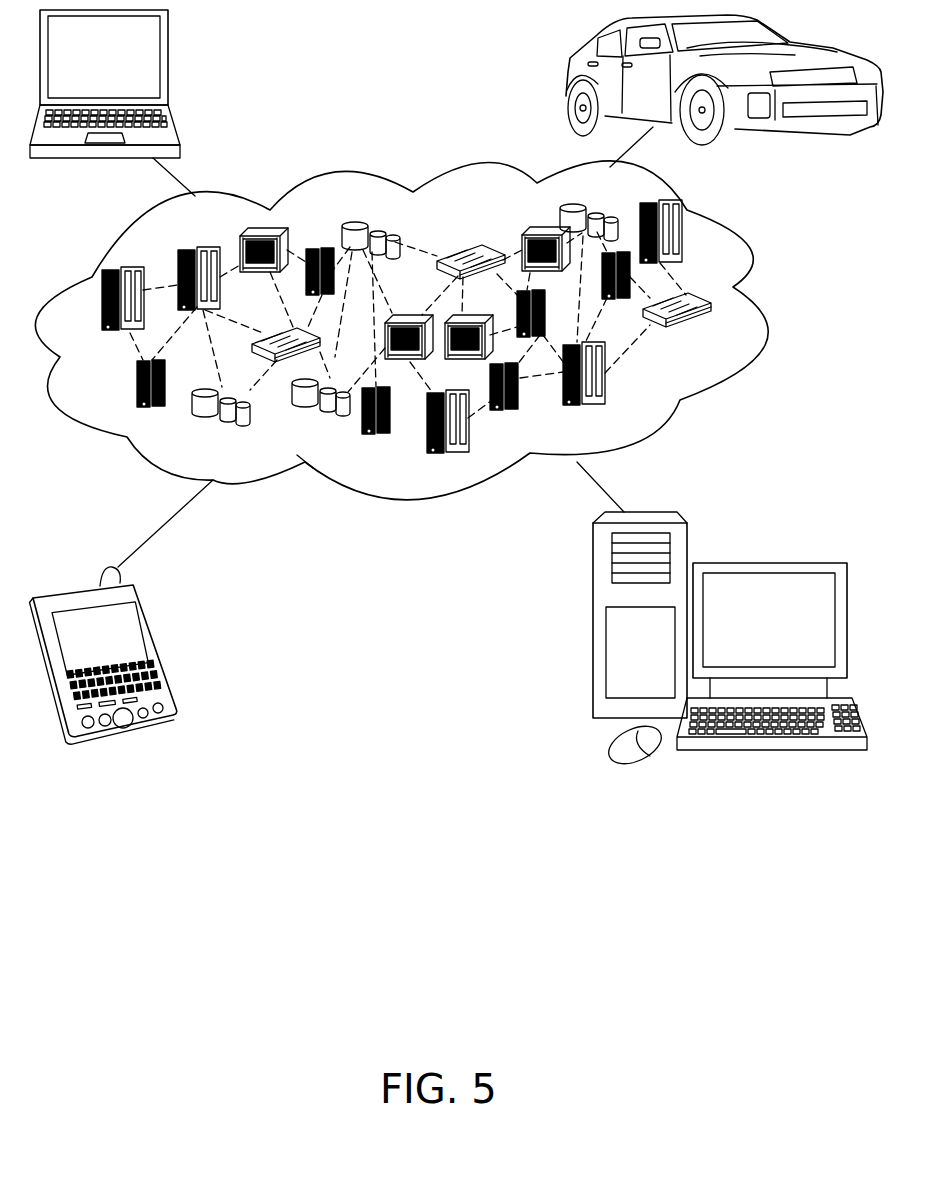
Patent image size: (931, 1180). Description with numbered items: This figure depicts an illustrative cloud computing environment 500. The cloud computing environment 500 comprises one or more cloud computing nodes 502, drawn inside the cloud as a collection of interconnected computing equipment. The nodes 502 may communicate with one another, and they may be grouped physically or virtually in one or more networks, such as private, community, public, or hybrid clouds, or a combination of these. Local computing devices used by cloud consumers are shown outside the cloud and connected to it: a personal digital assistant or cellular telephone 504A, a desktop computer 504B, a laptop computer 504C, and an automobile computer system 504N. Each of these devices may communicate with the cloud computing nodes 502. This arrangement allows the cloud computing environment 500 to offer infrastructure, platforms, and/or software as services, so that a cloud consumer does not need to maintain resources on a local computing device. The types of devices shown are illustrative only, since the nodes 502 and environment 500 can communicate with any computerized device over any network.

The cloud computing environment 500 is at (722, 303).
The cloud computing nodes 502 is at (713, 333).
The personal digital assistant or cellular telephone 504A is at (147, 617).
The desktop computer 504B is at (755, 562).
The laptop computer 504C is at (148, 42).
The automobile computer system 504N is at (566, 79).